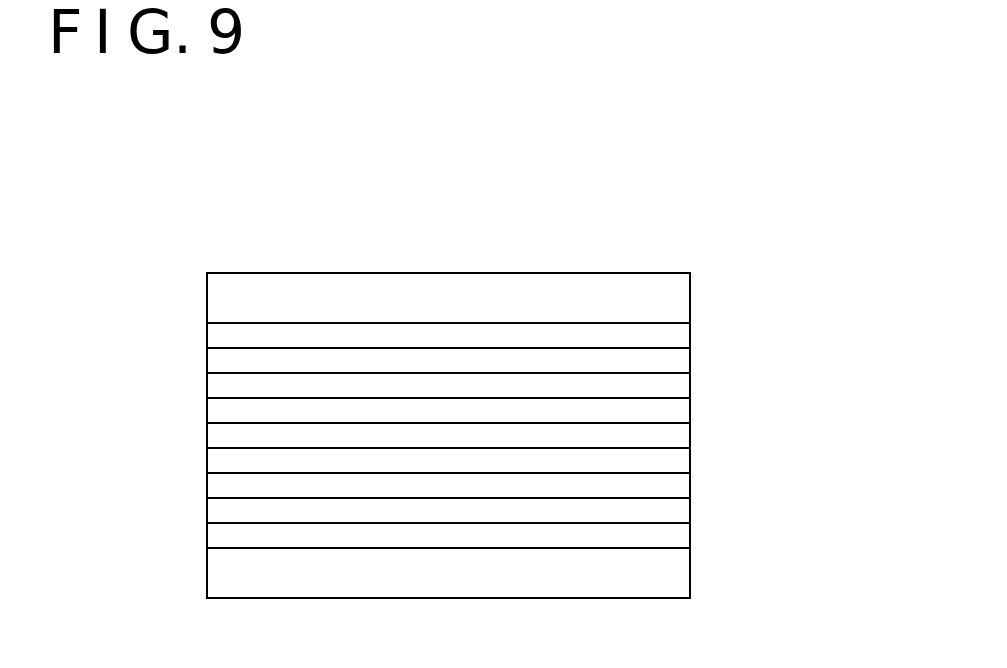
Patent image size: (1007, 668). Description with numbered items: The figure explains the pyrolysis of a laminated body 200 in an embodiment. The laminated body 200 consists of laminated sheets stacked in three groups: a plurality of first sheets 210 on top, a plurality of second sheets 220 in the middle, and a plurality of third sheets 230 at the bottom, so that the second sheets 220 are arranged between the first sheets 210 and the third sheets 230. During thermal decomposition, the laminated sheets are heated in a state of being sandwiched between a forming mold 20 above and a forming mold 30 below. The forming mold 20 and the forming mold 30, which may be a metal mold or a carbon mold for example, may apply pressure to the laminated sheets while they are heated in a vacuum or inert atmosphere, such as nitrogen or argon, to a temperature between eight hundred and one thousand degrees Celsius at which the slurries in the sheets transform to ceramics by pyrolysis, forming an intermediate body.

The forming mold 20 is at (690, 298).
The forming mold 30 is at (690, 573).
The laminated body 200 is at (802, 323).
The first sheet 210 is at (690, 335).
The second sheet 220 is at (690, 410).
The third sheet 230 is at (690, 485).